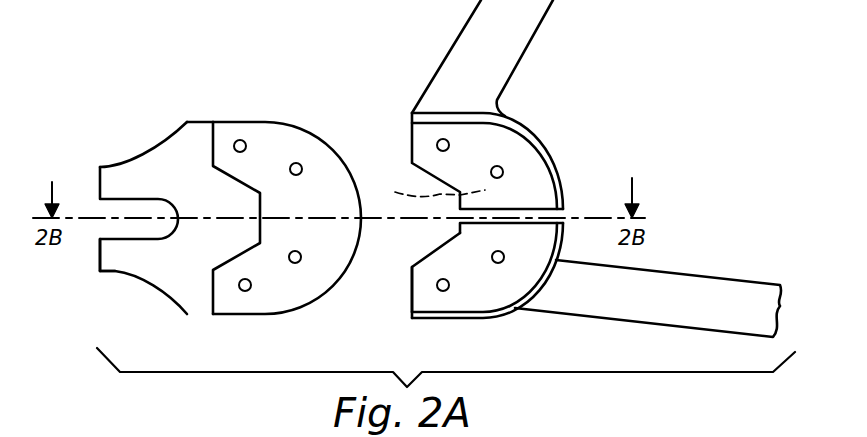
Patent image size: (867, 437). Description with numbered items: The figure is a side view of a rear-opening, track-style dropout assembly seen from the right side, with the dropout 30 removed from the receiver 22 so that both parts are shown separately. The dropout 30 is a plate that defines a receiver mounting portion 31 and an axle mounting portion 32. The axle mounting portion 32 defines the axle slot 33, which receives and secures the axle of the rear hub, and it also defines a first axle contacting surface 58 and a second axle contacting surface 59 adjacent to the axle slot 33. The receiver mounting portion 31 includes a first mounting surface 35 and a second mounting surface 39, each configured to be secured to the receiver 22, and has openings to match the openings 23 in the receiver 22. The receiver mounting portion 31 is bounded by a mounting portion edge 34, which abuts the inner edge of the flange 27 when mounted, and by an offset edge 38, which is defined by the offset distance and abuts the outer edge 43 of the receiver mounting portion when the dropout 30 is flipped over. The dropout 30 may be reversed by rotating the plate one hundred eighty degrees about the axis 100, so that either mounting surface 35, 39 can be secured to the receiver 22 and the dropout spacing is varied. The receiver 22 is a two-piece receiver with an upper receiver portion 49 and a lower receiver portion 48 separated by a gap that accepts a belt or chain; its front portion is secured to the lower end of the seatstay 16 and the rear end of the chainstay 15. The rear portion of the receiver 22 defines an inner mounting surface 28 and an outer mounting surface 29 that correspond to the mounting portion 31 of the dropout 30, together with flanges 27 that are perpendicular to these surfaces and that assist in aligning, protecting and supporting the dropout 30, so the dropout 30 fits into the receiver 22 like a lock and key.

The axis 100 is at (113, 217).
The dropout 30 is at (224, 183).
The axle slot 33 is at (153, 208).
The axle mounting portion 32 is at (182, 278).
The first axle contacting surface 58 is at (183, 152).
The second axle contacting surface 59 is at (118, 256).
The first mounting surface 35 is at (224, 138).
The offset edge 38 is at (263, 211).
The mounting portion edge 34 is at (327, 147).
The receiver mounting portion 31 is at (341, 163).
The second mounting surface 39 is at (322, 236).
The inner mounting surface 28 is at (426, 191).
The openings 23 is at (293, 264).
The receiver 22 is at (521, 58).
The seatstay 16 is at (553, 3).
The flange 27 is at (547, 156).
The upper receiver portion 49 is at (538, 189).
The lower receiver portion 48 is at (451, 291).
The outer edge 43 is at (457, 233).
The outer mounting surface 29 is at (432, 300).
The chainstay 15 is at (698, 272).